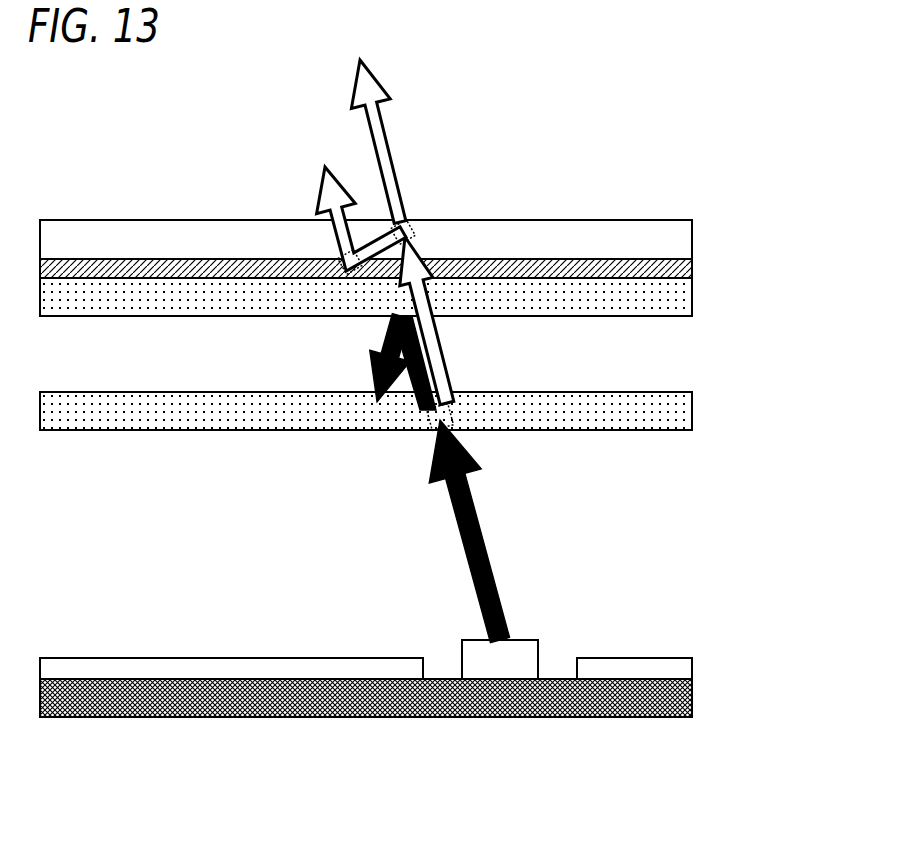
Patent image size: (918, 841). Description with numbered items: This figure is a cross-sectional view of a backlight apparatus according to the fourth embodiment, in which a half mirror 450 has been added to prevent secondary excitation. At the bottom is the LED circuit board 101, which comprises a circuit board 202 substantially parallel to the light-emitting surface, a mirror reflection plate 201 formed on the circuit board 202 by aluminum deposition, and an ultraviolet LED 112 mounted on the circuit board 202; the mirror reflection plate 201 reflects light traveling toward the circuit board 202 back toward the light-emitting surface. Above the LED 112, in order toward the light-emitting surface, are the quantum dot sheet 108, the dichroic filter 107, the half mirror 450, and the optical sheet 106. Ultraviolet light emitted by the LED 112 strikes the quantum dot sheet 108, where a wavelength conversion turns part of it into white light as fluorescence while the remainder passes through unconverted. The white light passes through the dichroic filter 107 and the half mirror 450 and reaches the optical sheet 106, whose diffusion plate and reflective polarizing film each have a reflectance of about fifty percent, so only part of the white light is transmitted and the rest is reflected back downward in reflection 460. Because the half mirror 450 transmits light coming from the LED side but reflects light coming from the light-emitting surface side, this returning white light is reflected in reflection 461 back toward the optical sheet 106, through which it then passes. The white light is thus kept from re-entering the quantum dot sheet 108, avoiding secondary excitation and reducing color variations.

The LED circuit board 101 is at (418, 680).
The optical sheet 106 is at (676, 232).
The dichroic filter 107 is at (678, 297).
The quantum dot sheet 108 is at (678, 404).
The LED 112 is at (518, 653).
The mirror reflection plate 201 is at (80, 670).
The circuit board 202 is at (680, 717).
The half mirror 450 is at (678, 268).
The reflection 460 is at (417, 222).
The reflection 461 is at (338, 268).